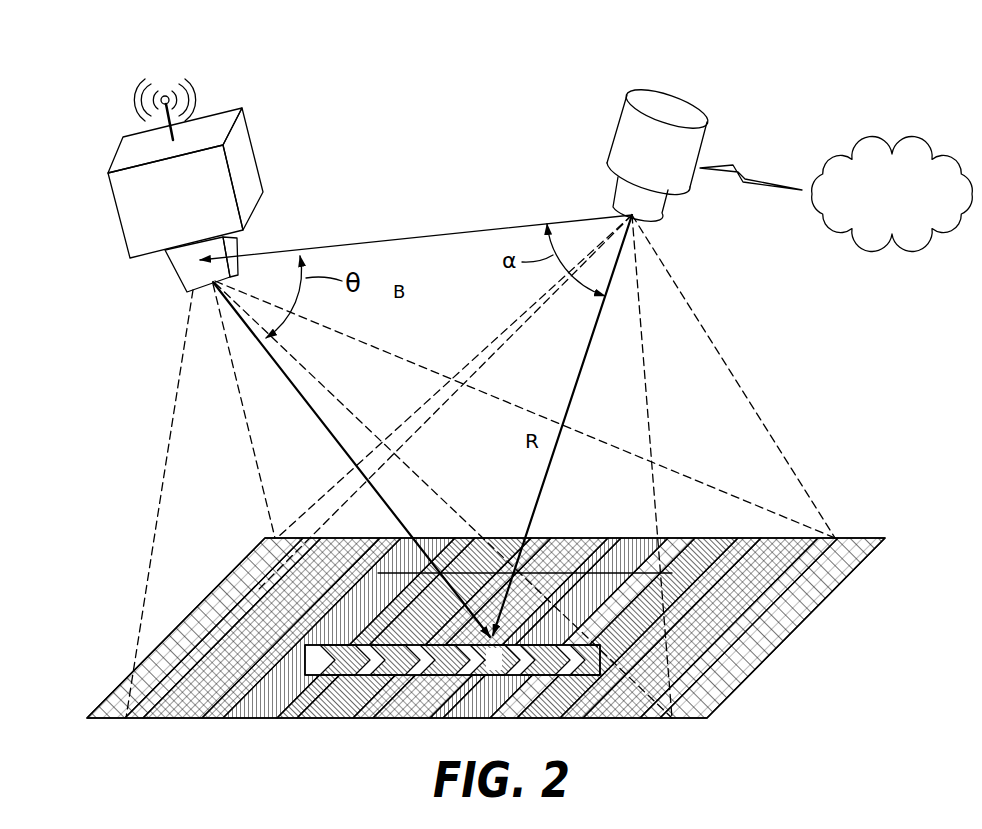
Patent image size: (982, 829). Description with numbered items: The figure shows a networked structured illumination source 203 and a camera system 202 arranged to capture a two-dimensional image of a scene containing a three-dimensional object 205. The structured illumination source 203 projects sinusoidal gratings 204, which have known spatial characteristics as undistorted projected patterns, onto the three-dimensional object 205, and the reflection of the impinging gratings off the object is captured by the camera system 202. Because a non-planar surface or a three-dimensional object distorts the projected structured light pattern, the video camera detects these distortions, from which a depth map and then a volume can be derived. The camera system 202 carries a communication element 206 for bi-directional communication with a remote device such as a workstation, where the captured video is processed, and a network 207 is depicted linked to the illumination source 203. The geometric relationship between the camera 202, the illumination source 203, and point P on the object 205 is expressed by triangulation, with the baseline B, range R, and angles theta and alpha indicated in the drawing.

The camera system 202 is at (221, 106).
The networked structured illumination source 203 is at (666, 110).
The sinusoidal gratings 204 is at (800, 628).
The 3D object 205 is at (300, 658).
The communication element 206 is at (165, 121).
The network 207 is at (897, 242).